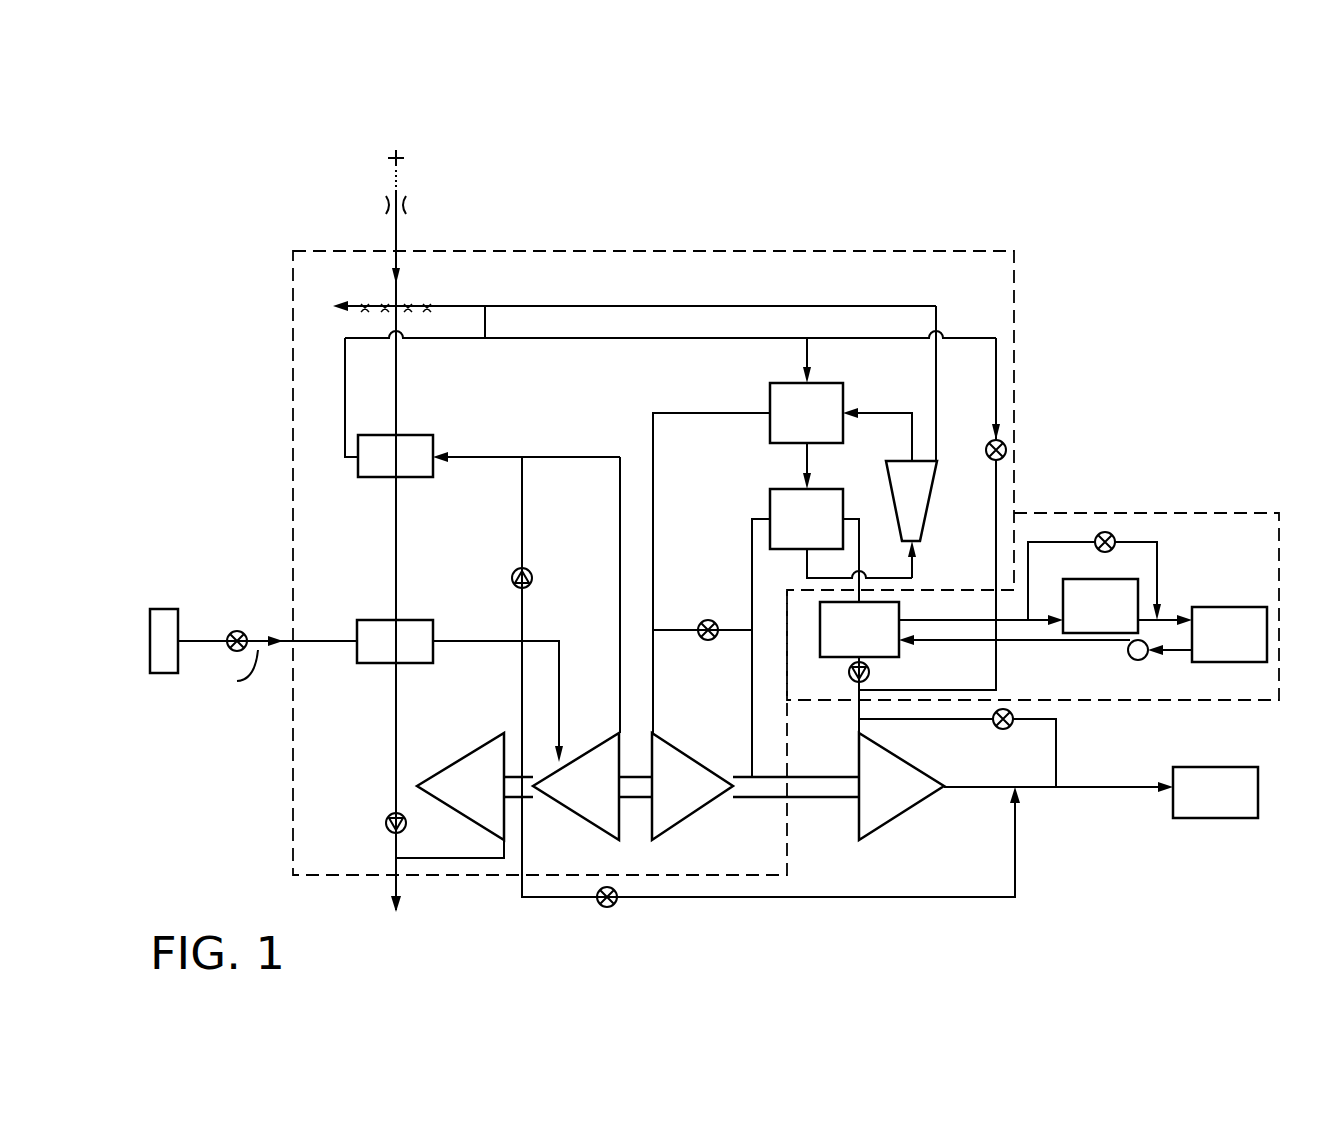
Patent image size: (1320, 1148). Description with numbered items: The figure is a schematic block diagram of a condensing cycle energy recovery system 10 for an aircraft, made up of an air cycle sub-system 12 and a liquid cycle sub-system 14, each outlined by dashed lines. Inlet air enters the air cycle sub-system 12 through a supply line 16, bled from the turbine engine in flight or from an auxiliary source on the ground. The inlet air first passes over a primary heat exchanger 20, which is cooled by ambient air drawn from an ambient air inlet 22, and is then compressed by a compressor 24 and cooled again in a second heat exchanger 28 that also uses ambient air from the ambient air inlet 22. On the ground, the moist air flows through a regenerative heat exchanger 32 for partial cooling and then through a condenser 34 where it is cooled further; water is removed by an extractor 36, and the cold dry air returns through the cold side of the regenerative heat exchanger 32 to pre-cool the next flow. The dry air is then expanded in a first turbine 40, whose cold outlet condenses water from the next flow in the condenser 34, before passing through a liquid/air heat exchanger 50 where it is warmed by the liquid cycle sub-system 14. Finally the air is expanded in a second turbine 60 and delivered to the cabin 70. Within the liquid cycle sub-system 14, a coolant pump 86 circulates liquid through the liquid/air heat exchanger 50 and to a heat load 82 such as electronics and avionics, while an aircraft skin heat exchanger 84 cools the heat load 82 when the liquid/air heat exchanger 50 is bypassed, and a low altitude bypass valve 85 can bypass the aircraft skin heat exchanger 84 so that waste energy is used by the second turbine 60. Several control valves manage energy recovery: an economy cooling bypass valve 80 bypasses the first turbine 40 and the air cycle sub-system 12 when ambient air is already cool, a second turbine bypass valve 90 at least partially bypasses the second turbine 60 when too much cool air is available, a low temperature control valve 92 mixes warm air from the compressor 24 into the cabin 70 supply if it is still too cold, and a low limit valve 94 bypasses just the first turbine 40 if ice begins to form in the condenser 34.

The condensing cycle energy recovery system 10 is at (862, 207).
The air cycle sub-system 12 is at (771, 250).
The liquid cycle sub-system 14 is at (1113, 510).
The supply line 16 is at (200, 640).
The primary heat exchanger 20 is at (375, 664).
The ambient air inlet 22 is at (398, 238).
The compressor 24 is at (600, 832).
The second heat exchanger 28 is at (375, 478).
The regenerative heat exchanger 32 is at (783, 382).
The condenser 34 is at (783, 489).
The extractor 36 is at (888, 500).
The first turbine 40 is at (673, 832).
The liquid/air heat exchanger 50 is at (890, 657).
The second turbine 60 is at (880, 832).
The cabin 70 is at (1210, 767).
The economy cooling bypass valve 80 is at (990, 445).
The heat load 82 is at (1232, 607).
The aircraft skin heat exchanger 84 is at (1108, 579).
The low altitude bypass valve 85 is at (1115, 539).
The coolant pump 86 is at (1132, 658).
The second turbine bypass valve 90 is at (997, 730).
The low temperature control valve 92 is at (602, 907).
The low limit valve 94 is at (708, 619).